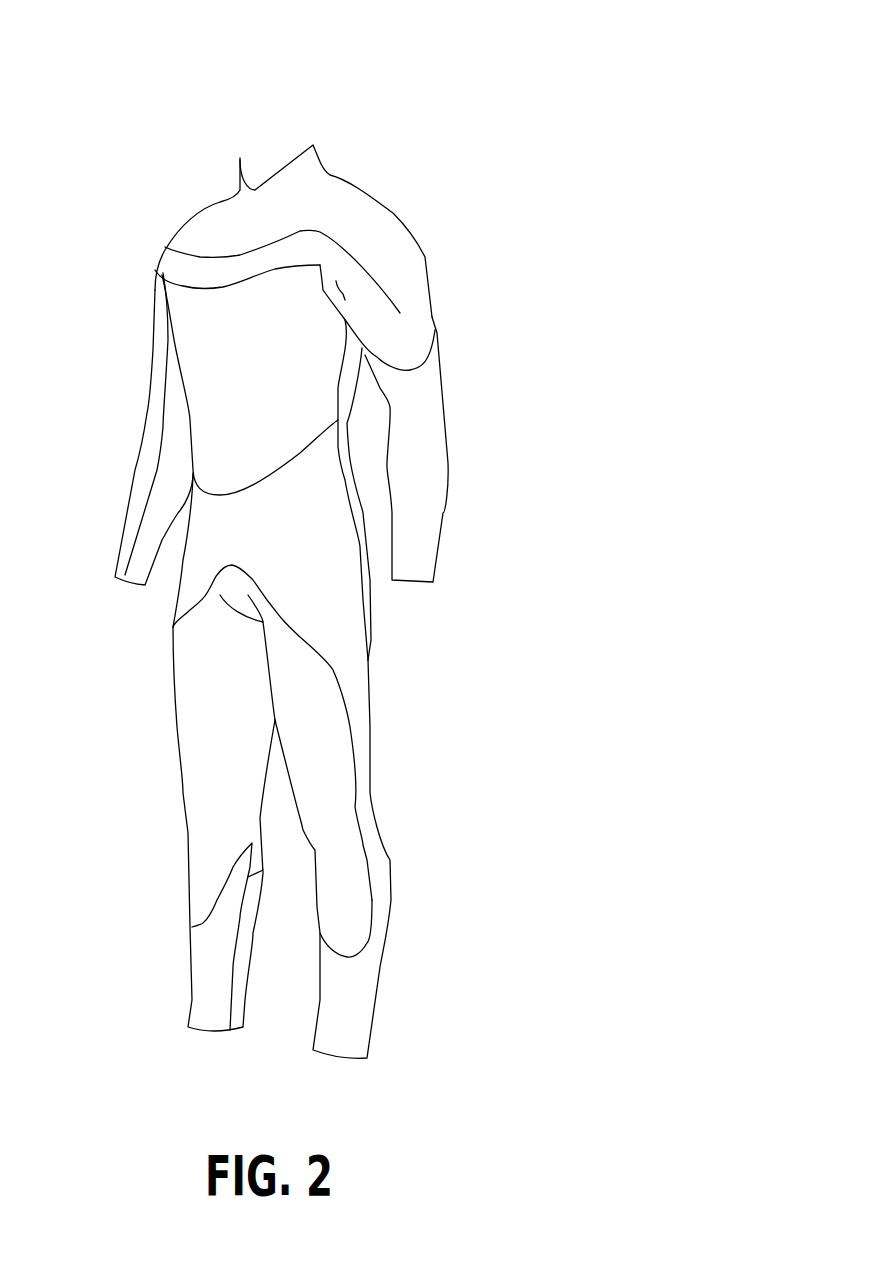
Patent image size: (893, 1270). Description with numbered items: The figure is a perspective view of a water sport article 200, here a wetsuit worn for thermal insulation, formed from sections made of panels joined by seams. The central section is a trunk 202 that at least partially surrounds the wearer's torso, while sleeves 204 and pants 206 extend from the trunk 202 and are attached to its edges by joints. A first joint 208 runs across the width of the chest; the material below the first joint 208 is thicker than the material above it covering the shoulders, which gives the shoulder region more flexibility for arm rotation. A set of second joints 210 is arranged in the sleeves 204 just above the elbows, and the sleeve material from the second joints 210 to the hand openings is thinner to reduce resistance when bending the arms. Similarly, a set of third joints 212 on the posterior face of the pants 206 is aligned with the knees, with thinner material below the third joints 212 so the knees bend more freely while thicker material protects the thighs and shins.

The water sport article 200 is at (480, 87).
The trunk 202 is at (185, 433).
The sleeves 204 is at (443, 297).
The pants 206 is at (412, 697).
The first joint 208 is at (183, 283).
The set of second joints 210 is at (427, 363).
The set of third joints 212 is at (363, 845).